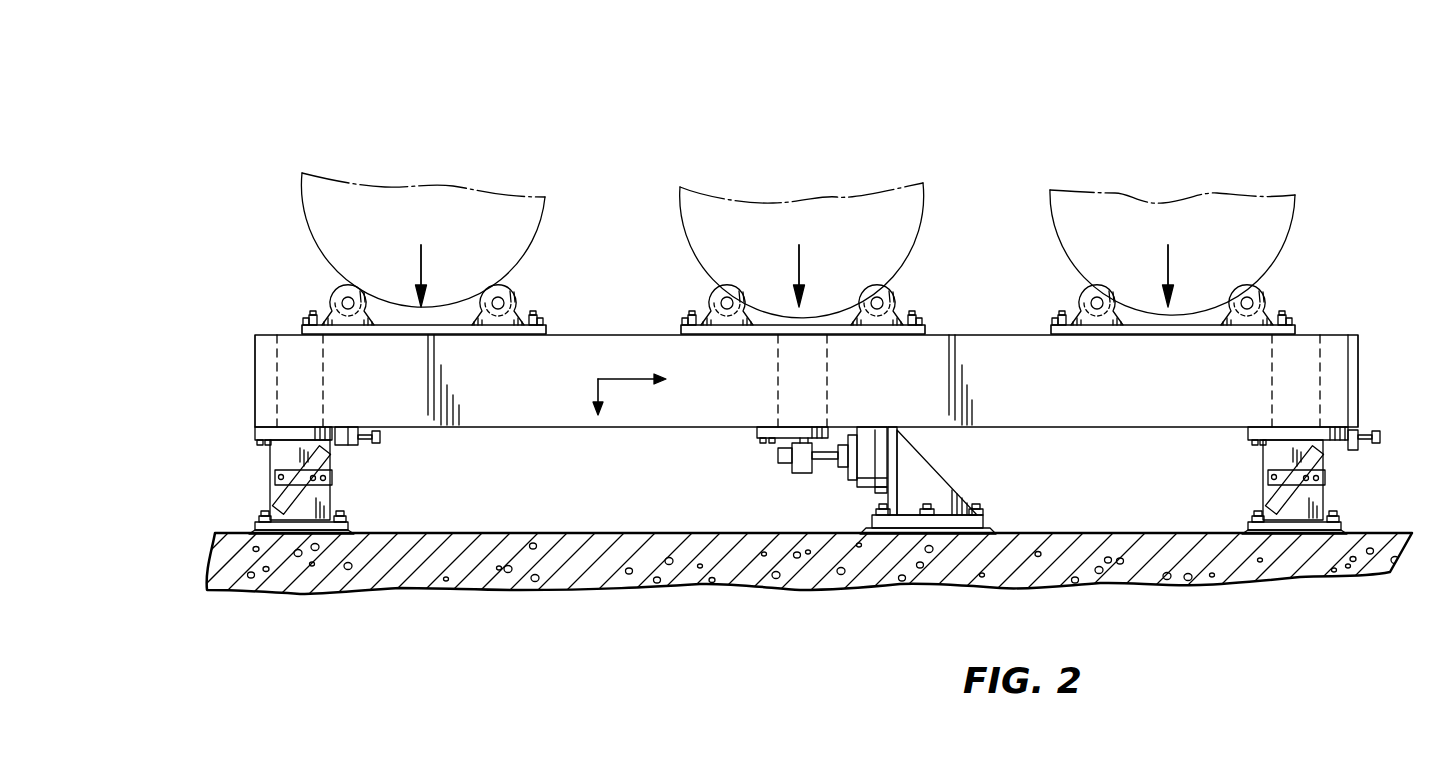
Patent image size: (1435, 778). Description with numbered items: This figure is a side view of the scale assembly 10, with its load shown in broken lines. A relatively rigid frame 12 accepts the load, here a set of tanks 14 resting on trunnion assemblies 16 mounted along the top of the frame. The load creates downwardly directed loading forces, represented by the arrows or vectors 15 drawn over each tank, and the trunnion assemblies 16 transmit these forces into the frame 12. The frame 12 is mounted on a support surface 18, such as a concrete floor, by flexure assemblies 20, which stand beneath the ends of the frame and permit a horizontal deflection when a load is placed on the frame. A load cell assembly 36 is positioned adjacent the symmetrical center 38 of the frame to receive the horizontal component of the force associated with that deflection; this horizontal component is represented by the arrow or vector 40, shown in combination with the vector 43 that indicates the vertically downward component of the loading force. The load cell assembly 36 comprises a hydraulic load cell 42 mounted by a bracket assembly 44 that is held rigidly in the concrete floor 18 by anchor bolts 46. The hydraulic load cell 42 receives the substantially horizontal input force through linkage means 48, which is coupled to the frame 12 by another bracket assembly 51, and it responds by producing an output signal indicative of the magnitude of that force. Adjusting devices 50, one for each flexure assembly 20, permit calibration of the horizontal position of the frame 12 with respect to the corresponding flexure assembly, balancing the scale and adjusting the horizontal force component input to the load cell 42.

The scale assembly 10 is at (1380, 328).
The frame 12 is at (531, 428).
The tanks 14 is at (544, 241).
The arrows or vectors 15 is at (421, 268).
The trunnion assemblies 16 is at (520, 313).
The support surface 18 is at (682, 572).
The flexure assemblies 20 is at (282, 455).
The load cell assembly 36 is at (850, 512).
The symmetrical center 38 is at (757, 442).
The arrow or vector 40 is at (627, 378).
The hydraulic load cell 42 is at (872, 440).
The vector 43 is at (598, 389).
The bracket assembly 44 is at (930, 485).
The anchor bolts 46 is at (975, 522).
The linkage means 48 is at (828, 462).
The adjusting devices 50 is at (355, 447).
The bracket assembly 51 is at (790, 462).